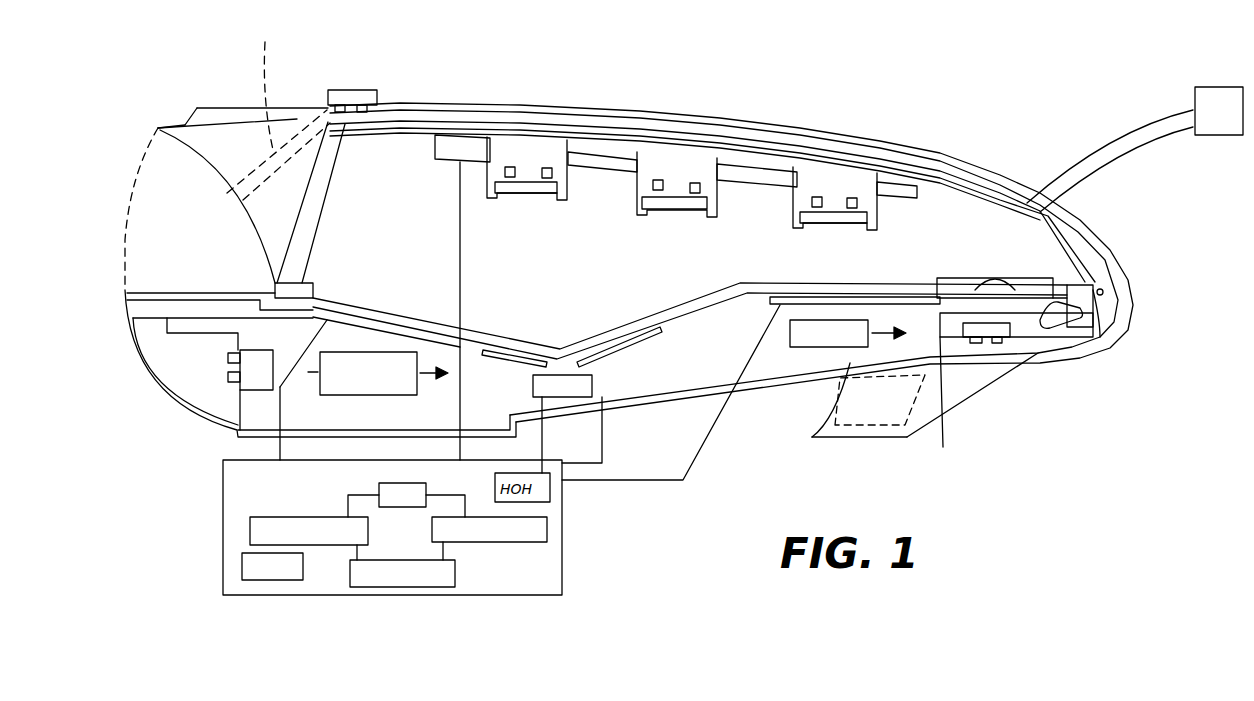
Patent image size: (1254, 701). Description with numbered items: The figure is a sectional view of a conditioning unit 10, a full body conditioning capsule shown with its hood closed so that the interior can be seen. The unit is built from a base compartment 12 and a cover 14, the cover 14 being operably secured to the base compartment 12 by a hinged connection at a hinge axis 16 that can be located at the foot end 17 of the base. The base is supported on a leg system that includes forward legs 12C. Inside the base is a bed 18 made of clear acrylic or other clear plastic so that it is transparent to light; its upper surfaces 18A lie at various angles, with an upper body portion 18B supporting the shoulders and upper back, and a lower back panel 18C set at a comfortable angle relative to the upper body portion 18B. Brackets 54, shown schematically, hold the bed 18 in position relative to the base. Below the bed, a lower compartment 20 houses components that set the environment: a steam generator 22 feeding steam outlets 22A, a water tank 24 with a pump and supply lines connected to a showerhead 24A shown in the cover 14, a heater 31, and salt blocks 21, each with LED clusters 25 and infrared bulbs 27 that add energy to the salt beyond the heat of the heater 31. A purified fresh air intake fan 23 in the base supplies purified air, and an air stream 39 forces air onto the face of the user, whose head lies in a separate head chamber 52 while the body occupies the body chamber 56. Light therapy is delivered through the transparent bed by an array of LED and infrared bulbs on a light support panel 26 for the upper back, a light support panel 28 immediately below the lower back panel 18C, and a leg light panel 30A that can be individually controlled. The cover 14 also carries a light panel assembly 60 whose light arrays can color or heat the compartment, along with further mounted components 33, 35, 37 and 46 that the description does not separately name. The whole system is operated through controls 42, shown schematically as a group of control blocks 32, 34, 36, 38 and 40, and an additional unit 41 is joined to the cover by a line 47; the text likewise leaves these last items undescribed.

The conditioning unit 10 is at (902, 130).
The base compartment 12 is at (776, 356).
The forward legs 12C is at (855, 437).
The cover 14 is at (772, 138).
The hinge axis 16 is at (1104, 294).
The foot end 17 is at (1103, 325).
The bed 18 is at (695, 290).
The upper surfaces 18A is at (478, 325).
The upper body portion 18B is at (353, 300).
The lower back panel 18C is at (663, 315).
The lower compartment 20 is at (640, 375).
The salt blocks 21 is at (258, 372).
The steam generator 22 is at (805, 297).
The steam outlets 22A is at (995, 275).
The purified fresh air intake fan 23 is at (1012, 333).
The water tank 24 is at (355, 393).
The showerhead 24A is at (385, 135).
The LED clusters 25 is at (333, 106).
The light support panel 26 is at (480, 362).
The infrared bulbs 27 is at (380, 135).
The light support panel 28 is at (668, 340).
The leg light panel 30A is at (1009, 391).
The heater 31 is at (552, 400).
The halo control 32 is at (242, 565).
The housing 33 is at (838, 175).
The frequency control 34 is at (327, 517).
The housing 35 is at (680, 165).
The intensity control 36 is at (487, 542).
The housing 37 is at (530, 150).
The LED control 38 is at (428, 488).
The air stream 39 is at (278, 109).
The infrared control 40 is at (350, 585).
The power source 41 is at (1197, 88).
The controls 42 is at (562, 568).
The top housing 46 is at (353, 90).
The conduit 47 is at (1092, 158).
The head chamber 52 is at (165, 188).
The brackets 54 is at (268, 292).
The body chamber 56 is at (950, 208).
The light panel assembly 60 is at (586, 172).